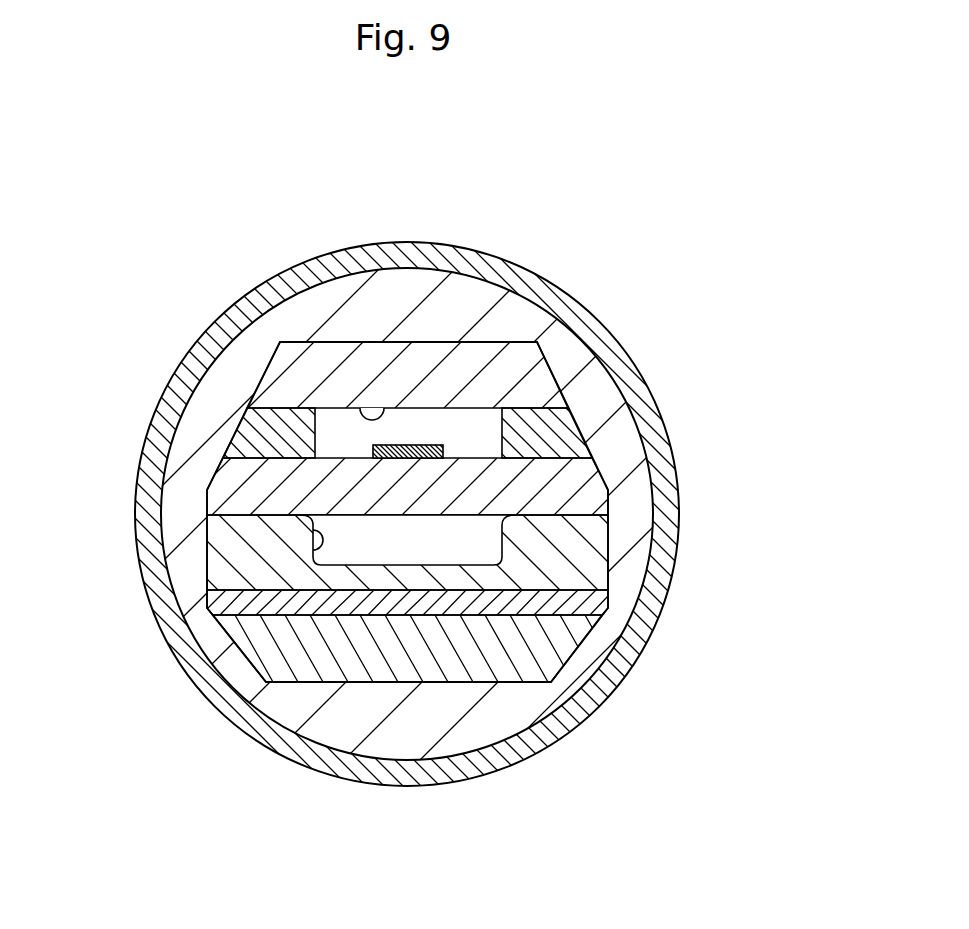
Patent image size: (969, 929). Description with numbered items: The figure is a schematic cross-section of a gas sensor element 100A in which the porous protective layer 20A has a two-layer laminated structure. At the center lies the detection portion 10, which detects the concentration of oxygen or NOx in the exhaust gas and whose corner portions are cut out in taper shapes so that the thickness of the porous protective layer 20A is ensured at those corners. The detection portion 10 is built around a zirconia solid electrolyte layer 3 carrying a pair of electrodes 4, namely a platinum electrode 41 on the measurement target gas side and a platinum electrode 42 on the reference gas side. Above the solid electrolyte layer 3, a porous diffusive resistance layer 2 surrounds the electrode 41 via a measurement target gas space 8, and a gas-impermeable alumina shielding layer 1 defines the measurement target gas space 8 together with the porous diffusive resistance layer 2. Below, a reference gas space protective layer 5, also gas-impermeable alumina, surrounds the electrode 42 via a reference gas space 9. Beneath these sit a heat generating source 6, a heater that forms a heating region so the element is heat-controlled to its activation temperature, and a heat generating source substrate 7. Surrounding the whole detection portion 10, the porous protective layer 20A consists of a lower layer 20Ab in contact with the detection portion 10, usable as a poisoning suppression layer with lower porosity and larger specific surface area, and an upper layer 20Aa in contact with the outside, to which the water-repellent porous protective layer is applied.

The gas sensor element 100A is at (450, 522).
The detection portion 10 is at (450, 437).
The shielding layer 1 is at (515, 378).
The porous diffusive resistance layer 2 is at (560, 433).
The solid electrolyte layer 3 is at (425, 548).
The pair of electrodes 4 is at (484, 486).
The electrode on the measurement target gas side 41 is at (417, 450).
The electrode on the reference gas side 42 is at (420, 517).
The reference gas space protective layer 5 is at (580, 548).
The heat generating source 6 is at (540, 603).
The heat generating source substrate 7 is at (473, 648).
The measurement target gas space 8 is at (382, 400).
The reference gas space 9 is at (318, 537).
The porous protective layer 20A is at (407, 565).
The upper layer 20Aa is at (458, 768).
The lower layer 20Ab is at (510, 843).